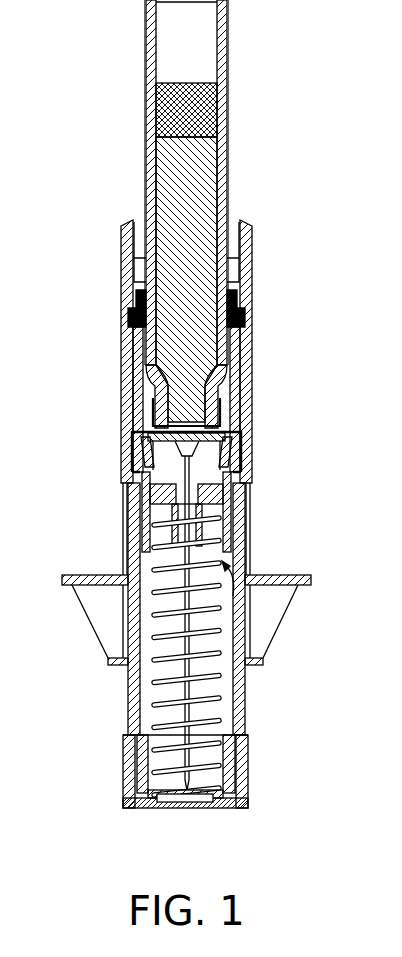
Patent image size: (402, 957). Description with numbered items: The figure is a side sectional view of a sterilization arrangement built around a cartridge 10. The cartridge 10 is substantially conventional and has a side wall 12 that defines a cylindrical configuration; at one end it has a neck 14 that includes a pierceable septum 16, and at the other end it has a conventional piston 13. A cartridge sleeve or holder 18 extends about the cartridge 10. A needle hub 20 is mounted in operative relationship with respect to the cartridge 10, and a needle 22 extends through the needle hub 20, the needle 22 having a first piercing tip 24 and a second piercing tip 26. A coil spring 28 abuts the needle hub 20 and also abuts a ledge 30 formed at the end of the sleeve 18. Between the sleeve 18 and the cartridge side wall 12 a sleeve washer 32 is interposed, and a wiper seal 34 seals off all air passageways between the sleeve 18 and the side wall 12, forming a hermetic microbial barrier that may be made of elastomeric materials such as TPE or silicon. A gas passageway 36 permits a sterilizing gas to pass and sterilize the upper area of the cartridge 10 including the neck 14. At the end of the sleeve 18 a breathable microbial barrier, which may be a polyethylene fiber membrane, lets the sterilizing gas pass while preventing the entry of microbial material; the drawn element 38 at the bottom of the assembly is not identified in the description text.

The cartridge 10 is at (236, 54).
The side wall 12 is at (223, 175).
The piston 13 is at (186, 110).
The neck 14 is at (207, 392).
The pierceable septum 16 is at (220, 430).
The cartridge sleeve 18 is at (108, 329).
The needle hub 20 is at (192, 517).
The needle 22 is at (190, 617).
The first piercing tip 24 is at (175, 457).
The second piercing tip 26 is at (190, 783).
The coil spring 28 is at (218, 640).
The ledge 30 is at (135, 802).
The sleeve washer 32 is at (232, 385).
The wiper seal 34 is at (237, 315).
The gas passageway 36 is at (245, 612).
The bottom plate 38 is at (193, 808).